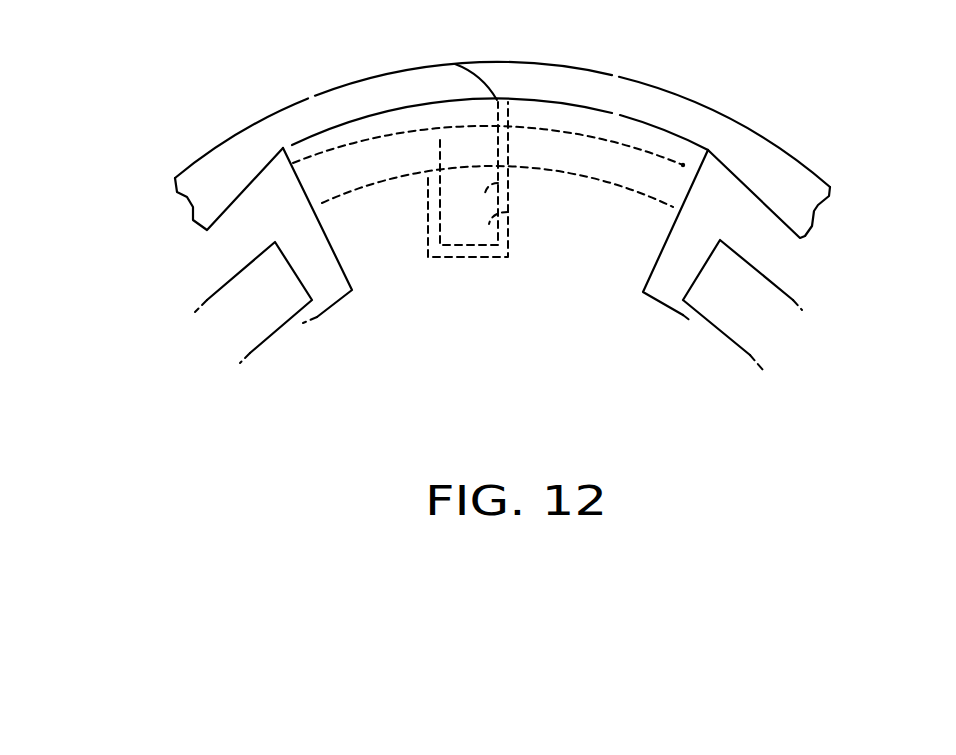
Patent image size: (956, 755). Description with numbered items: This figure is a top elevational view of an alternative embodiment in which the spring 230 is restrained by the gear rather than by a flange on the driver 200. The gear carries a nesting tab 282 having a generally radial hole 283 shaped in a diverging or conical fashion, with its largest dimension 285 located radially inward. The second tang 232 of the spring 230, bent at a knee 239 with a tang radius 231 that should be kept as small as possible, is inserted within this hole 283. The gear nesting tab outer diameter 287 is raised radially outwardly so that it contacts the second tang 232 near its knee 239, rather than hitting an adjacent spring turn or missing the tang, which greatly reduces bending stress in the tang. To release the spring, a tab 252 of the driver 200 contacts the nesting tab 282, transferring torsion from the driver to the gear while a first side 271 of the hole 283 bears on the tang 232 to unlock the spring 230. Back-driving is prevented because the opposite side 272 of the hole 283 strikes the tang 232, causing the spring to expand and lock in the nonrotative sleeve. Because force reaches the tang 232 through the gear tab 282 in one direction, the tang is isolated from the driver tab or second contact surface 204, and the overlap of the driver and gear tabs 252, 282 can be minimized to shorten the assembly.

The driver 200 is at (247, 312).
The driver tab (second contact surface) 204 is at (298, 265).
The spring 230 is at (214, 165).
The tang radius 'R' 231 is at (427, 136).
The second tang 232 is at (463, 222).
The knee 239 is at (488, 82).
The driver tab 252 is at (260, 278).
The first side of the hole 271 is at (425, 242).
The opposite side of the gear tab nesting hole 272 is at (510, 212).
The nesting tab 282 is at (653, 225).
The radial hole 283 is at (510, 183).
The largest dimension 285 is at (495, 258).
The gear nesting tab outer diameter 287 is at (384, 107).